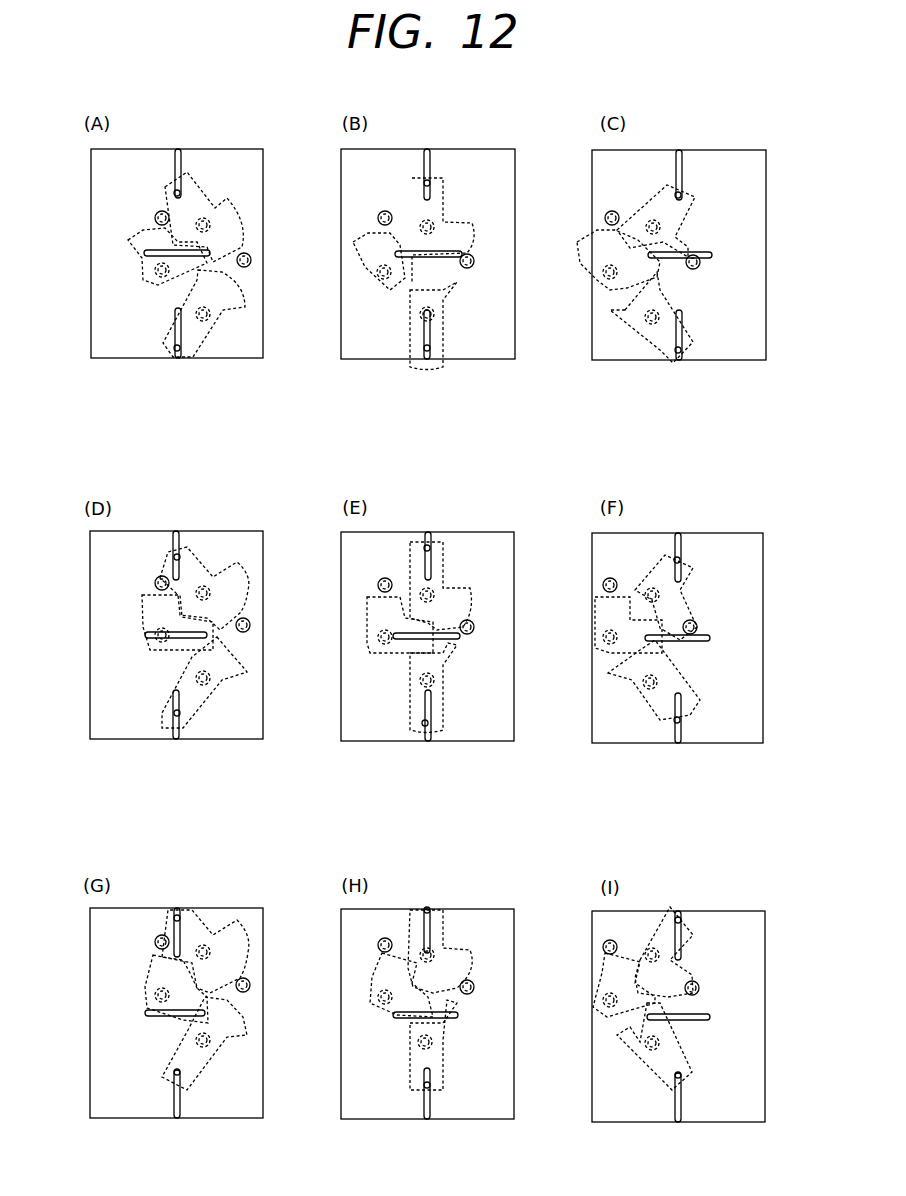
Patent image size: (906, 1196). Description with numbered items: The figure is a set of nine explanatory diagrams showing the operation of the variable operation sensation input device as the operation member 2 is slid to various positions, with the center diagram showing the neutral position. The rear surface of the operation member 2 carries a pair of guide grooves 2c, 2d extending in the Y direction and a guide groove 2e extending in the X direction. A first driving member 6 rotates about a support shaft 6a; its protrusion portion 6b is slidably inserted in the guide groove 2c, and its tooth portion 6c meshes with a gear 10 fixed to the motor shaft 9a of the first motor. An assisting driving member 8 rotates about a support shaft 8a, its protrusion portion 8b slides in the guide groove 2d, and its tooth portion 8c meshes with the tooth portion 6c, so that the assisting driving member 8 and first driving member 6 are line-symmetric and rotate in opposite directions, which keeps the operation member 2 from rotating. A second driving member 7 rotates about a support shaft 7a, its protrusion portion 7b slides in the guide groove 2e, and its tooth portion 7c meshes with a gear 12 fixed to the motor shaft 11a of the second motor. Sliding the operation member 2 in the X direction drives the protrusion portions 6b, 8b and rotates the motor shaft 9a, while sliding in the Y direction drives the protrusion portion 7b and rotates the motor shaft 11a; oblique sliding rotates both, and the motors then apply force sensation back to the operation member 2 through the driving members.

The operation member 2 is at (232, 357).
The guide groove 2c is at (177, 153).
The guide groove 2d is at (173, 318).
The guide groove 2e is at (144, 253).
The first driving member 6 is at (230, 200).
The support shaft 6a is at (212, 224).
The protrusion portion 6b is at (180, 192).
The tooth portion 6c is at (240, 200).
The second driving member 7 is at (140, 233).
The support shaft 7a is at (157, 273).
The protrusion portion 7b is at (430, 255).
The tooth portion 7c is at (585, 245).
The assisting driving member 8 is at (217, 323).
The support shaft 8a is at (210, 317).
The protrusion portion 8b is at (174, 348).
The tooth portion 8c is at (245, 298).
The motor shaft 9a is at (248, 267).
The gear 10 is at (253, 259).
The motor shaft 11a is at (156, 218).
The gear 12 is at (156, 215).